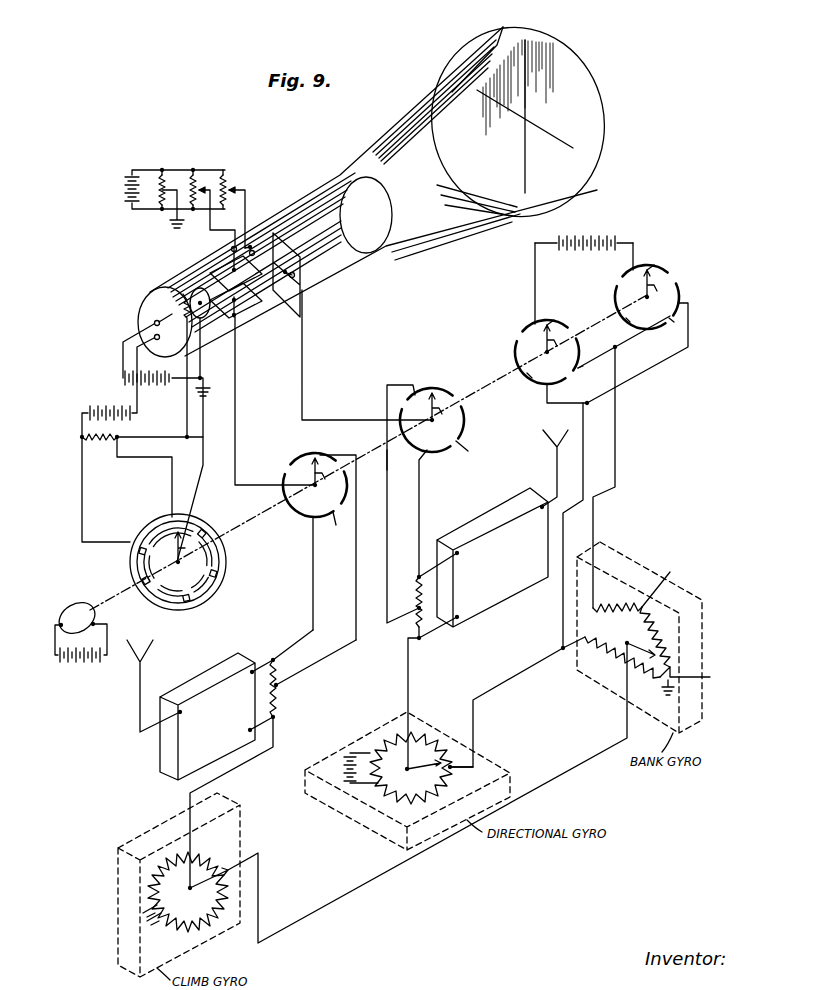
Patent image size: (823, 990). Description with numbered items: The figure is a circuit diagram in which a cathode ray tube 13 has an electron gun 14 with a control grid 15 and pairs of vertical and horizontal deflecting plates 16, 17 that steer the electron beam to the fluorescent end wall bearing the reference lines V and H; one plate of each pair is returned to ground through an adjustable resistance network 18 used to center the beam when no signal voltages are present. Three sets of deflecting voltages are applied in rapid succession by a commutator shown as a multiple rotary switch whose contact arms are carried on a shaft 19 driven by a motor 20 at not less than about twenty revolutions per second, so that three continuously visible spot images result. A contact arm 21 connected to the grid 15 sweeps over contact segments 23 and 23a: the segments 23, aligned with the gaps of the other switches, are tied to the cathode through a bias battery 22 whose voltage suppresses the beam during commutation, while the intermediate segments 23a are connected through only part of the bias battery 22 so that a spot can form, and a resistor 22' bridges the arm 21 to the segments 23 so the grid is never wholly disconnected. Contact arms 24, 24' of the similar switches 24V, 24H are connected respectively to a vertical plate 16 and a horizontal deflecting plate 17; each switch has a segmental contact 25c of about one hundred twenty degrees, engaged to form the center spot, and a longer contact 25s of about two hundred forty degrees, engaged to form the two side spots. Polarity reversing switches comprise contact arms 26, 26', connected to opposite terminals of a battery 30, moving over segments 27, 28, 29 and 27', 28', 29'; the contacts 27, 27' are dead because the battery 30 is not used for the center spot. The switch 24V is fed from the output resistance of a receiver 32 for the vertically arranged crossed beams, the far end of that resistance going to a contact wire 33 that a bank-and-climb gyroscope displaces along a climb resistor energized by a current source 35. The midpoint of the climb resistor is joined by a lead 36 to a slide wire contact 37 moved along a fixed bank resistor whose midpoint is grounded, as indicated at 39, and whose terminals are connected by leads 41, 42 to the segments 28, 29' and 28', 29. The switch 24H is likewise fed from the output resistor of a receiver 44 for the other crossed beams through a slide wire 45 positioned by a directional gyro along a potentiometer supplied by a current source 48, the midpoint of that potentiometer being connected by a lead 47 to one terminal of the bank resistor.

The cathode ray tube 13 is at (393, 130).
The electron gun 14 is at (158, 314).
The control grid 15 is at (186, 300).
The vertical deflecting plates 16 is at (240, 276).
The horizontal deflecting plates 17 is at (272, 240).
The resistance network 18 is at (183, 172).
The shaft 19 is at (387, 450).
The motor 20 is at (66, 610).
The contact arm 21 is at (178, 553).
The bias battery 22 is at (146, 456).
The resistor 22' is at (142, 475).
The contact segments 23 is at (200, 540).
The contact segments 23a is at (197, 536).
The contact arm 24 is at (295, 478).
The contact arm 24' is at (401, 456).
The switch 24V is at (339, 529).
The switch 24H is at (478, 454).
The segmental contact 25c is at (312, 457).
The longer contact 25s is at (300, 518).
The contact arm 26 is at (601, 324).
The contact arm 26' is at (647, 286).
The contact segment 27 is at (561, 311).
The contact segment 27' is at (666, 256).
The contact segment 28 is at (518, 387).
The contact segment 28' is at (617, 329).
The contact segment 29 is at (592, 378).
The contact segment 29' is at (676, 337).
The battery 30 is at (594, 240).
The receiver 32 is at (165, 758).
The contact wire 33 is at (188, 892).
The current source 35 is at (144, 913).
The lead 36 is at (371, 880).
The slide wire contact 37 is at (645, 646).
The ground connection 39 is at (664, 666).
The lead 41 is at (562, 624).
The lead 42 is at (616, 455).
The receiver 44 is at (485, 605).
The slide wire 45 is at (411, 768).
The lead 47 is at (518, 676).
The current source 48 is at (347, 755).